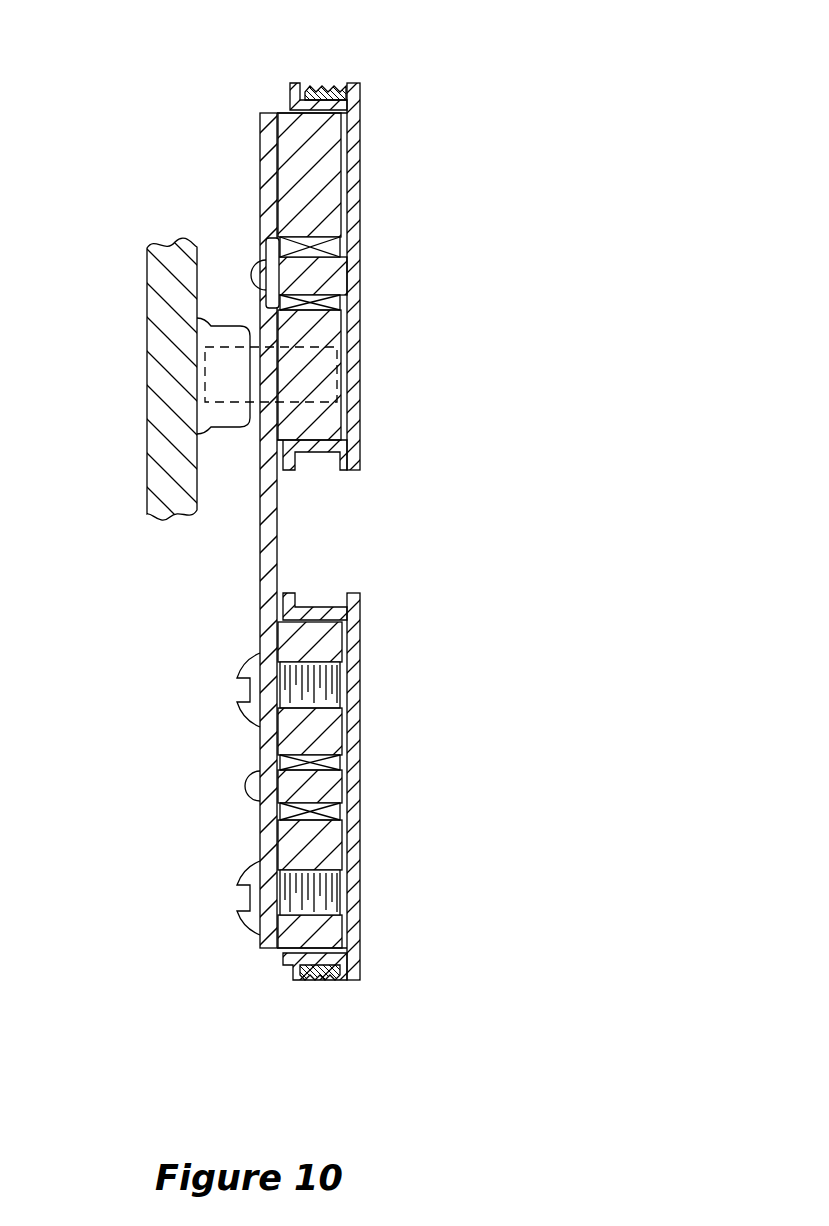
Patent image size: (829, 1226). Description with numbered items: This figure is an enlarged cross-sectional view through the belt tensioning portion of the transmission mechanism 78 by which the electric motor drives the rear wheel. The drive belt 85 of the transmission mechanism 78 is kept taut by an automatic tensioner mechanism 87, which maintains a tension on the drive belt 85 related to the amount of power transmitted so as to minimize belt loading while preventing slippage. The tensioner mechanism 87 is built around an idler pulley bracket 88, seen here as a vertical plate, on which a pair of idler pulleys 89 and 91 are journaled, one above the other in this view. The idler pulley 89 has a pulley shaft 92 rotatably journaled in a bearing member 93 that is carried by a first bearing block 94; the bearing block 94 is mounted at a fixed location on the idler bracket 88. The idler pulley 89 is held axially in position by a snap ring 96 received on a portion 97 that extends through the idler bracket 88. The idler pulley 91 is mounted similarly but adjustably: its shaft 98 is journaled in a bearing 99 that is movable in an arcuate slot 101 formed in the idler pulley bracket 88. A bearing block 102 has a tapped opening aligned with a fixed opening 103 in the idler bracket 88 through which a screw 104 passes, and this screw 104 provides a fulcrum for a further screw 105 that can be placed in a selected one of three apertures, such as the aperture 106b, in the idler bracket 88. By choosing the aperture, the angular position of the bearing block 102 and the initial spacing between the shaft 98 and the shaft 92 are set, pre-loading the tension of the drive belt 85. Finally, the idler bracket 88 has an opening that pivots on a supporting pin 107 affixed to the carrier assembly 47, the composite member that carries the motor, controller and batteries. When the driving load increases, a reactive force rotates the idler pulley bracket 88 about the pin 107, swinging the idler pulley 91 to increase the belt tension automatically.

The carrier assembly 47 is at (160, 375).
The transmission mechanism 78 is at (348, 523).
The drive belt 85 is at (322, 83).
The tensioner mechanism 87 is at (140, 543).
The idler pulley bracket 88 is at (260, 559).
The idler pulley 89 is at (384, 169).
The idler pulley 91 is at (372, 753).
The pulley shaft 92 is at (350, 282).
The bearing member 93 is at (345, 305).
The first bearing block 94 is at (305, 157).
The snap ring 96 is at (265, 243).
The portion 97 is at (270, 300).
The shaft 98 is at (343, 790).
The bearing 99 is at (345, 850).
The arcuate slot 101 is at (262, 762).
The bearing block 102 is at (275, 734).
The fixed opening 103 is at (262, 667).
The screw 104 is at (238, 677).
The further screw 105 is at (250, 875).
The aperture 106b is at (262, 905).
The supporting pin 107 is at (335, 375).